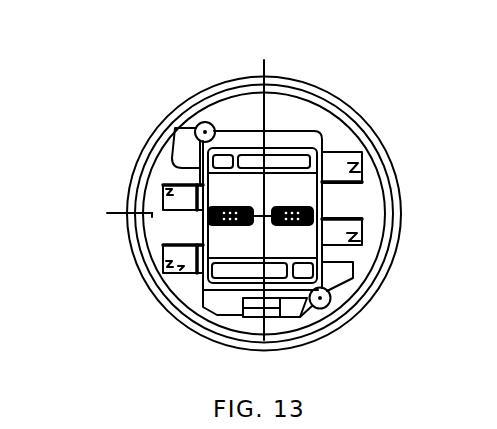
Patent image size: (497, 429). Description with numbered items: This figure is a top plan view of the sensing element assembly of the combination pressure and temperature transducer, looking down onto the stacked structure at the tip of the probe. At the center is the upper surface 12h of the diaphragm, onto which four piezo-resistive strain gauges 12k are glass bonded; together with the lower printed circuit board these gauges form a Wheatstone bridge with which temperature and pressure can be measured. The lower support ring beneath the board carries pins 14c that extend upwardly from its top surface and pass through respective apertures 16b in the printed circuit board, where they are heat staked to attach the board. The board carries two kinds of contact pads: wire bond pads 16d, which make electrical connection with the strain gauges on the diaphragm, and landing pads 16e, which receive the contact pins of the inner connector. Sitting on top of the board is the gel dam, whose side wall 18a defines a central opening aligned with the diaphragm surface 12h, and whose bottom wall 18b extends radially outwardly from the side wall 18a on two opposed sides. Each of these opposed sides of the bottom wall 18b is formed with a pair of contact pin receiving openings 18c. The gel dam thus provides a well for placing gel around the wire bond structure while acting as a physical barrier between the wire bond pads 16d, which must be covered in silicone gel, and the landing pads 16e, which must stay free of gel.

The upper surface 12h is at (362, 186).
The piezo-resistive strain gauges 12k is at (250, 198).
The pins 14c is at (320, 298).
The apertures 16b is at (329, 306).
The wire bond pads 16d is at (262, 198).
The landing pads 16e is at (348, 160).
The side wall 18a is at (205, 231).
The bottom wall 18b is at (152, 214).
The contact pin receiving openings 18c is at (162, 183).